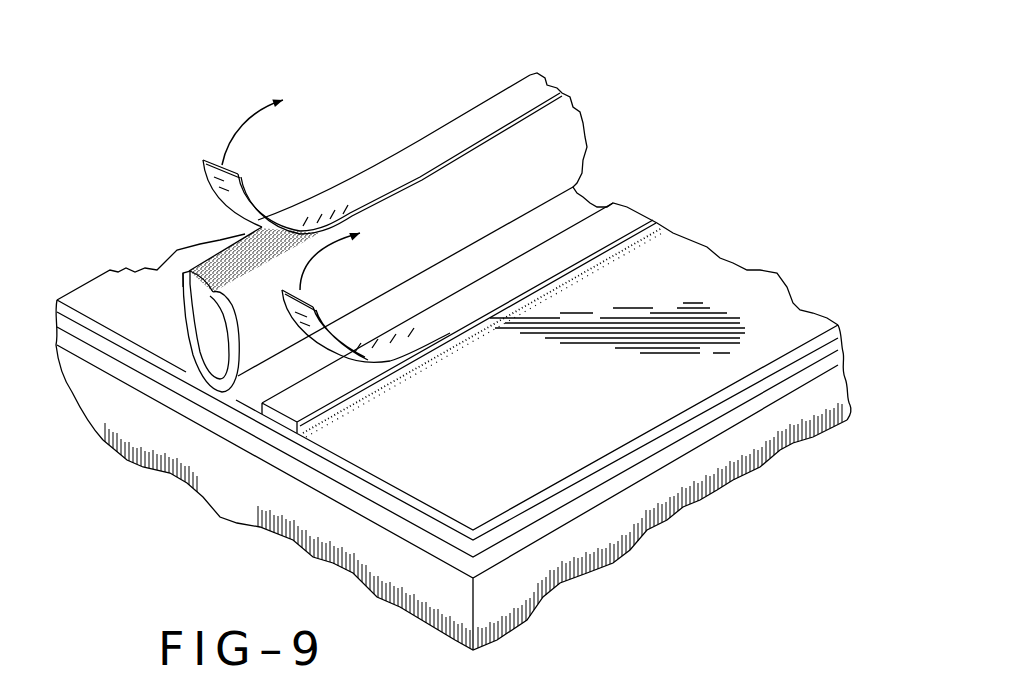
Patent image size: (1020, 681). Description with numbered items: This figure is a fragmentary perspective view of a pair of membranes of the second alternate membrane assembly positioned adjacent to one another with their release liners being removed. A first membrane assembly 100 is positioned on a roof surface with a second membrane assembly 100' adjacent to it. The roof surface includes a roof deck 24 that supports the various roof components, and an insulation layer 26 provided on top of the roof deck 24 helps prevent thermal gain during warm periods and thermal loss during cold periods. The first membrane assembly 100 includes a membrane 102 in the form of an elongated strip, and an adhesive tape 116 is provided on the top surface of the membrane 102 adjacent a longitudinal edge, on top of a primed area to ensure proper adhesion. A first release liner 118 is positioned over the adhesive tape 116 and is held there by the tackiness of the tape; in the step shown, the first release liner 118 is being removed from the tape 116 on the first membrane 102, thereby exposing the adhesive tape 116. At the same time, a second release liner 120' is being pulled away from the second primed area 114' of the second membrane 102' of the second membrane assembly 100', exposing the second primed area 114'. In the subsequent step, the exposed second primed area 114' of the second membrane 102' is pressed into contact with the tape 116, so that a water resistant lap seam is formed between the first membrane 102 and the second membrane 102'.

The second alternate membrane assembly 100 is at (453, 361).
The second membrane assembly 100' is at (306, 209).
The membrane 102 is at (453, 301).
The second membrane 102' is at (306, 288).
The second primed area 114' is at (226, 248).
The adhesive tape 116 is at (312, 393).
The first release liner 118 is at (517, 267).
The second release liner 120' is at (382, 154).
The roof deck 24 is at (650, 468).
The insulation layer 26 is at (577, 490).